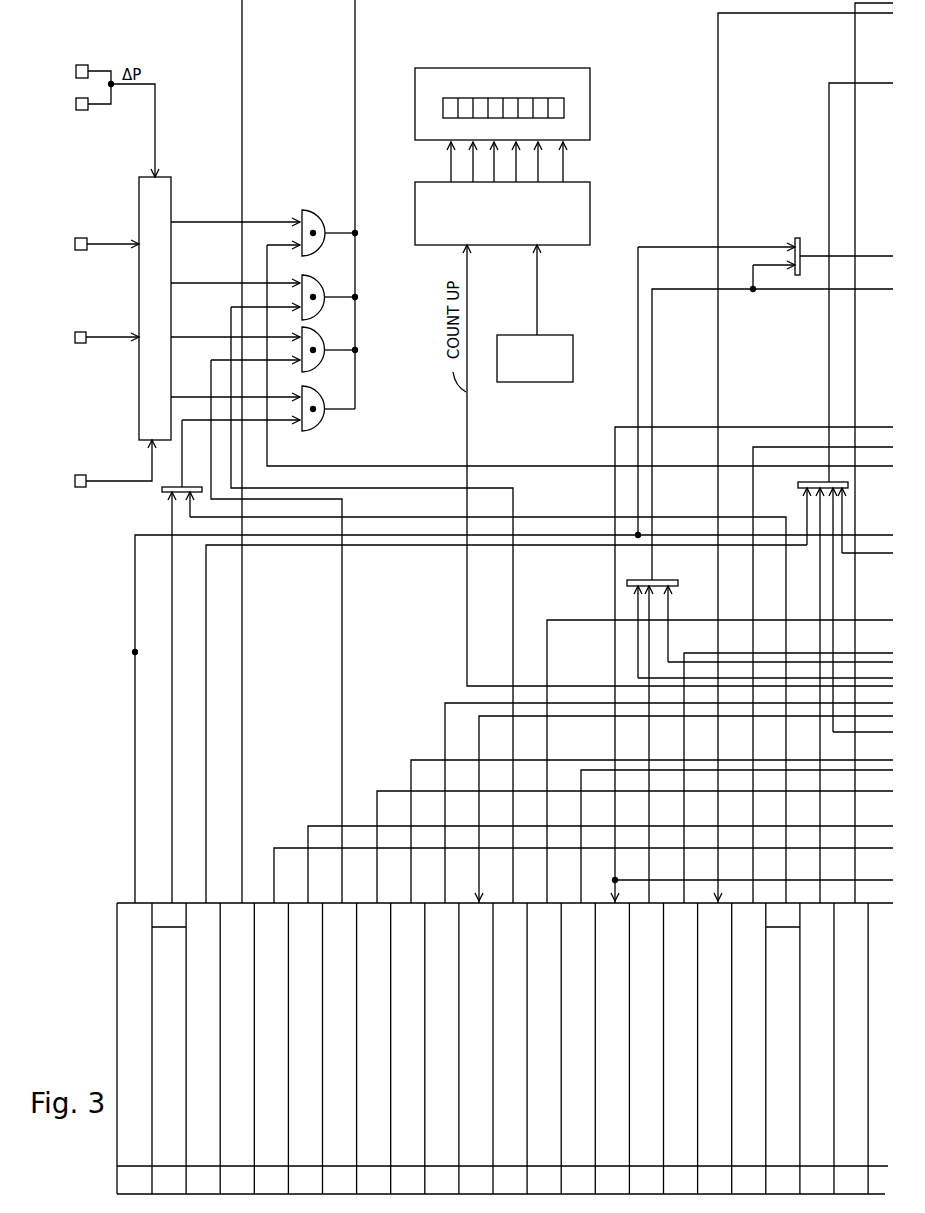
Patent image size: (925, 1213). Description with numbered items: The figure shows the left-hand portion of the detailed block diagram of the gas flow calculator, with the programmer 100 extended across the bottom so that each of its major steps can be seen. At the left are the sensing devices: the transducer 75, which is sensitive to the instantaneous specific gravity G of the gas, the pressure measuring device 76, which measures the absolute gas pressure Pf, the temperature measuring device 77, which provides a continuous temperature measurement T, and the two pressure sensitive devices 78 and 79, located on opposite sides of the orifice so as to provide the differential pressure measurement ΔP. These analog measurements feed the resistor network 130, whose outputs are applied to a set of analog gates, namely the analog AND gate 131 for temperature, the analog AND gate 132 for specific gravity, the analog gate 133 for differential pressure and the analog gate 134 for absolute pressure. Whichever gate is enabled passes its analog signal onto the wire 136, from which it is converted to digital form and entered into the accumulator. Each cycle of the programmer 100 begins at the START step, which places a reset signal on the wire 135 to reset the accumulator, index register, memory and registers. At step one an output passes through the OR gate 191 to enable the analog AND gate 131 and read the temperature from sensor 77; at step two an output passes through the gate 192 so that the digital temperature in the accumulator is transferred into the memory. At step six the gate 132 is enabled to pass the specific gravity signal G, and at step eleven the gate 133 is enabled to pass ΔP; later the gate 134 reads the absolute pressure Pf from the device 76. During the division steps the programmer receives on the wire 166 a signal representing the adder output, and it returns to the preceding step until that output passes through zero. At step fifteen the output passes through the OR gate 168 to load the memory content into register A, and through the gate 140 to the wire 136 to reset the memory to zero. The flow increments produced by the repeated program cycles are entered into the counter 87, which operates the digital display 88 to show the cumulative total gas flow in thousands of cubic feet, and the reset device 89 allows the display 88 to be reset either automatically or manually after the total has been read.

The transducer 75 is at (76, 460).
The pressure measuring device 76 is at (79, 344).
The temperature measuring device 77 is at (76, 243).
The pressure sensitive device 78 is at (81, 111).
The pressure sensitive device 79 is at (83, 64).
The resistor network 130 is at (172, 186).
The analog AND gate 131 is at (317, 428).
The analog AND gate 132 is at (317, 363).
The analog gate 133 is at (317, 312).
The analog gate 134 is at (304, 214).
The reset wire 135 is at (133, 652).
The wire 136 is at (356, 338).
The gate 140 is at (801, 240).
The wire 166 is at (645, 866).
The OR gate 168 is at (660, 580).
The OR gate 191 is at (165, 491).
The gate 192 is at (799, 484).
The counter 87 is at (582, 202).
The digital display 88 is at (581, 87).
The reset device 89 is at (551, 338).
The programmer 100 is at (117, 972).